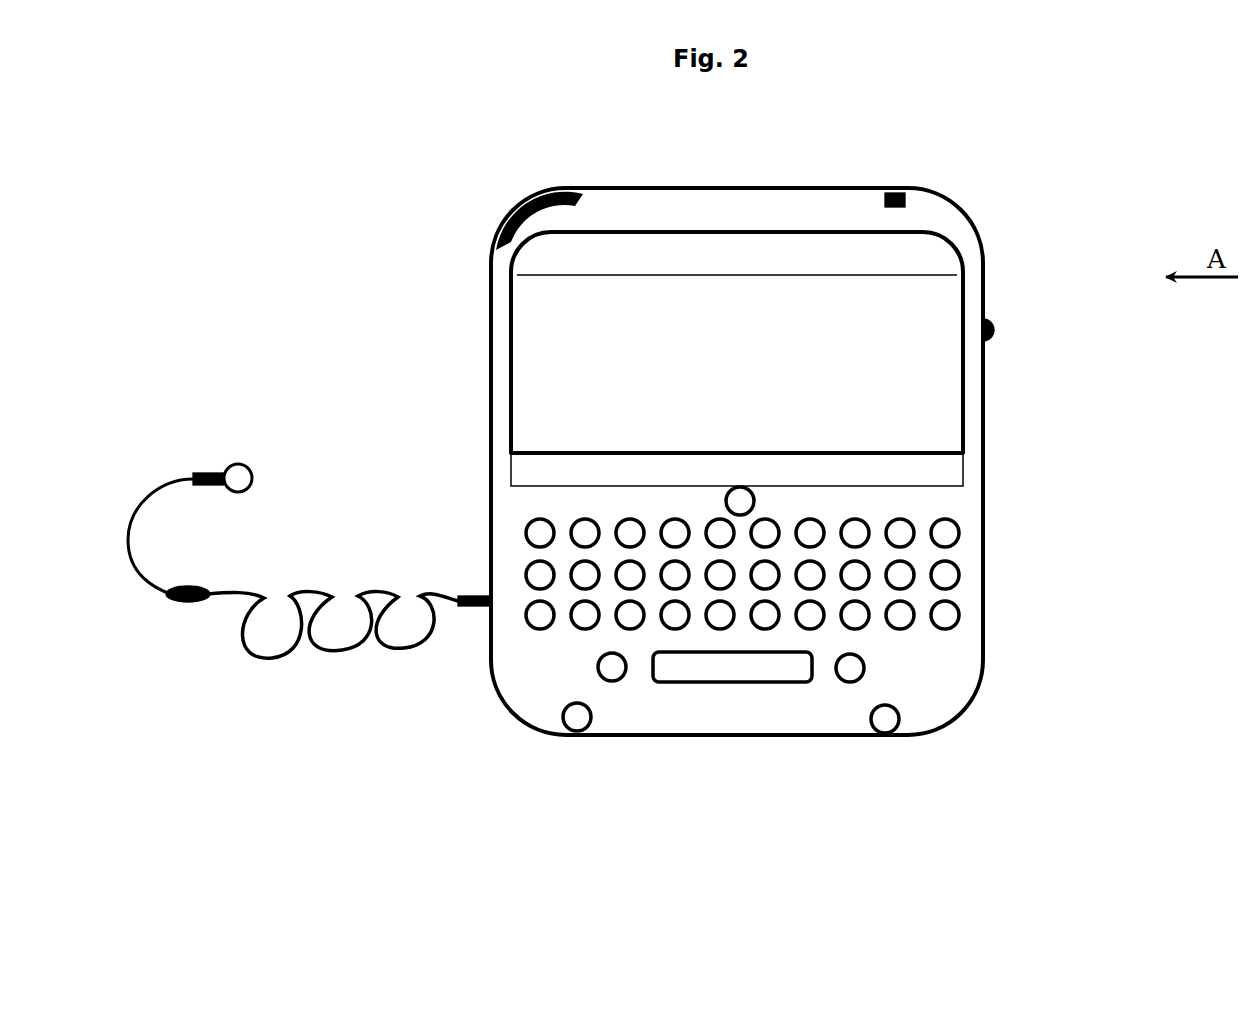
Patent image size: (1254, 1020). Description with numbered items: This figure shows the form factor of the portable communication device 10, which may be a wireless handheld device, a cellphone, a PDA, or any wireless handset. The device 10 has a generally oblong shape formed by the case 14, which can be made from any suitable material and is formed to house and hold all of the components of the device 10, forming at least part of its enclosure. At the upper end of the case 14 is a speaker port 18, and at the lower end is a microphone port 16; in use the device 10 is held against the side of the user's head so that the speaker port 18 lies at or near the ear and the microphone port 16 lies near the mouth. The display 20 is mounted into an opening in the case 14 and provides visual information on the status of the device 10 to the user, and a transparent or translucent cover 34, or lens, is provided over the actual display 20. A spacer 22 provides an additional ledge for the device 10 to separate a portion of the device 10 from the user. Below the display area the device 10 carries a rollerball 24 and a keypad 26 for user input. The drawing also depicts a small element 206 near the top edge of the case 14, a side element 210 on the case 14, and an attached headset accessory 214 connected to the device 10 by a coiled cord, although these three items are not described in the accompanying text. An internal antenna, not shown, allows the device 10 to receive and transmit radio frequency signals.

The portable communication device 10 is at (768, 513).
The case 14 is at (983, 588).
The microphone port 16 is at (571, 742).
The speaker port 18 is at (511, 211).
The display 20 is at (530, 412).
The cover 34 is at (702, 380).
The spacer 22 is at (855, 442).
The rollerball 24 is at (756, 501).
The keypad 26 is at (966, 637).
The camera 206 is at (908, 200).
The side button 210 is at (998, 330).
The headset 214 is at (266, 474).